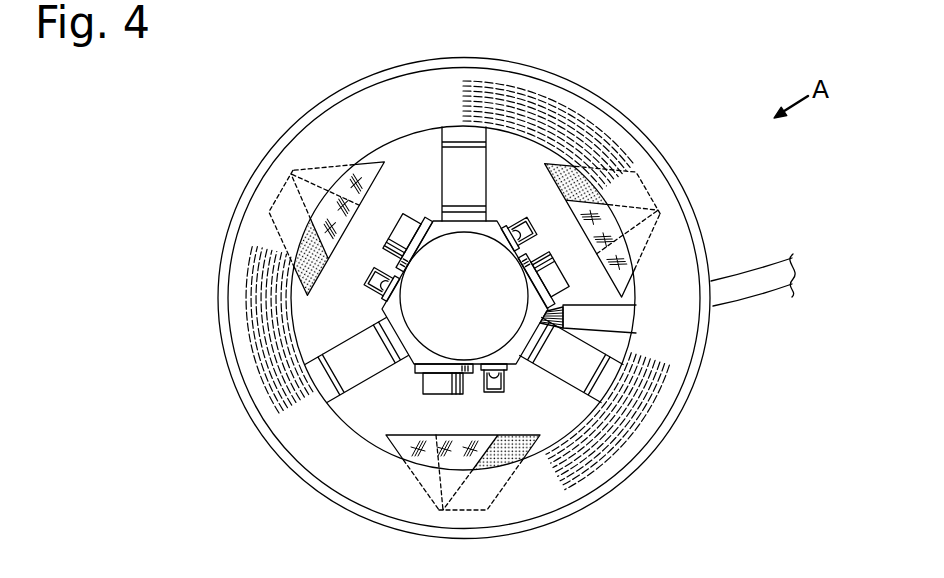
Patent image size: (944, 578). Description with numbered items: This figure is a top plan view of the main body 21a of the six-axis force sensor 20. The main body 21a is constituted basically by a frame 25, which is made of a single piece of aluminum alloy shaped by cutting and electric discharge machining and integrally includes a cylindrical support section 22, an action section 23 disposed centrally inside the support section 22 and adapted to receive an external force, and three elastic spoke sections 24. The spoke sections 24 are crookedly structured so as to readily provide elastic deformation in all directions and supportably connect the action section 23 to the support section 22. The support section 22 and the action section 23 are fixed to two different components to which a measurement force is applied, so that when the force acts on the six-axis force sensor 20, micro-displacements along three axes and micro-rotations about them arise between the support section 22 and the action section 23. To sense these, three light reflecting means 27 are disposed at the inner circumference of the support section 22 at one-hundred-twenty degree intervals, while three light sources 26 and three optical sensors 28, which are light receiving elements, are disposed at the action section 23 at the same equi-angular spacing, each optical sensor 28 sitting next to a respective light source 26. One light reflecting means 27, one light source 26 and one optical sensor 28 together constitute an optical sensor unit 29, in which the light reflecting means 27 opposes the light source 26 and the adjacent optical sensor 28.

The six-axis force sensor 20 is at (224, 146).
The cylindrical main body 21a is at (772, 380).
The cylindrical support section 22 is at (313, 450).
The action section 23 is at (472, 252).
The elastic spoke sections 24 is at (448, 167).
The frame 25 is at (716, 337).
The light sources 26 is at (528, 222).
The light reflecting means 27 is at (620, 226).
The optical sensors 28 is at (553, 272).
The optical sensor unit 29 is at (603, 298).